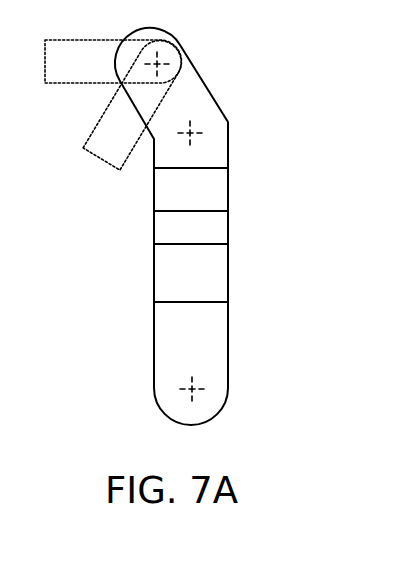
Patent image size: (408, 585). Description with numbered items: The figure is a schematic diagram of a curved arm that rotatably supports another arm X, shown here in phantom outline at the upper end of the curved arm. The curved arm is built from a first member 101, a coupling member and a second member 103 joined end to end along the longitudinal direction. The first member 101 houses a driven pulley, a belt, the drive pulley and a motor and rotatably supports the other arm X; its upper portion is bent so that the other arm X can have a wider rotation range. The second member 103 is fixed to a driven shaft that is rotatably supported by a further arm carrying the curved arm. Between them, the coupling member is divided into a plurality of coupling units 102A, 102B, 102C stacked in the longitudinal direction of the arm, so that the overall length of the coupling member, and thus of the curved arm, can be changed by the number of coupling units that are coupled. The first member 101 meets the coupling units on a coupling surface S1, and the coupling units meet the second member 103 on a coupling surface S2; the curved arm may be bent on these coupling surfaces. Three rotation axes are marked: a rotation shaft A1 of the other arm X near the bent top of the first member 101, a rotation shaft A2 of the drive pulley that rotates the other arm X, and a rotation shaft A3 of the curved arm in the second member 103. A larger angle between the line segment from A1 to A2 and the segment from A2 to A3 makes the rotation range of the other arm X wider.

The other arm X is at (103, 162).
The first member 101 is at (228, 152).
The coupling surface S1 is at (210, 168).
The coupling unit 102A is at (153, 202).
The coupling unit 102B is at (153, 227).
The coupling unit 102C is at (153, 267).
The coupling surface S2 is at (213, 302).
The second member 103 is at (228, 333).
The rotation shaft of the other arm A1 is at (157, 64).
The rotation shaft of the drive pulley A2 is at (195, 123).
The rotation shaft of the curved arm A3 is at (198, 387).